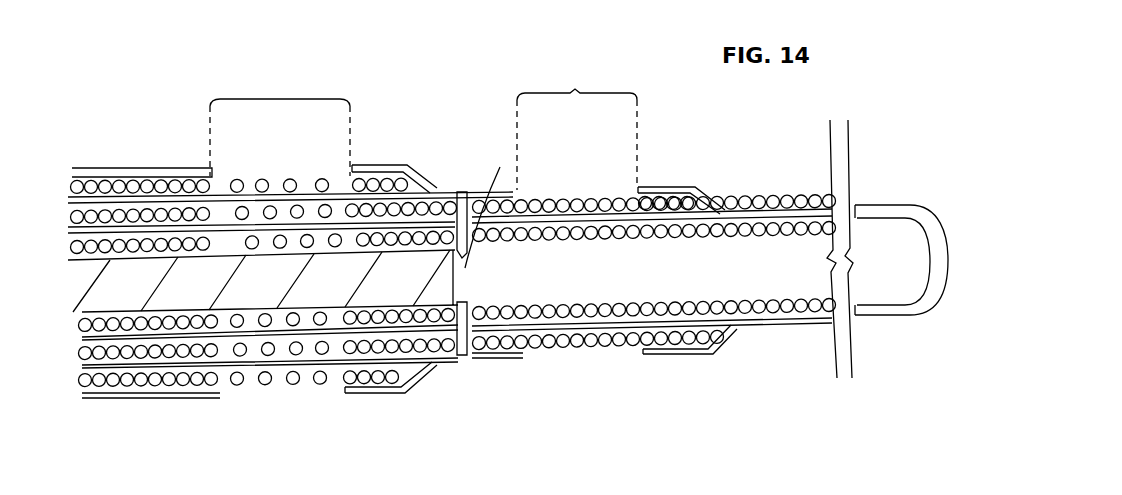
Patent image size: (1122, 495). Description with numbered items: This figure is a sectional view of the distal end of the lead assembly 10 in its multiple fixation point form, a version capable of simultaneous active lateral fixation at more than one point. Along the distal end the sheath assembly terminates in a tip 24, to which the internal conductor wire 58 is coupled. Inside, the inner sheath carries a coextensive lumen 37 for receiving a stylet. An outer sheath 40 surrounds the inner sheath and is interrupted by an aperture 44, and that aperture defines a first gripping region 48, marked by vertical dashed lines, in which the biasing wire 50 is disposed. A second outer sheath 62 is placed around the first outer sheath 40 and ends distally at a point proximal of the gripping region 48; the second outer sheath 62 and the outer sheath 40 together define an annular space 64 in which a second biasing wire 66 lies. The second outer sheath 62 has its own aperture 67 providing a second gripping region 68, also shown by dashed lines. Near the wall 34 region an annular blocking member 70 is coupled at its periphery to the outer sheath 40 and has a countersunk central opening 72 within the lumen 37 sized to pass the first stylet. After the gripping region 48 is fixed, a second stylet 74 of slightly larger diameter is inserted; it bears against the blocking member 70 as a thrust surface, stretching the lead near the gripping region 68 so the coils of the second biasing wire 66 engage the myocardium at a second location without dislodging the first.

The lead assembly 10 is at (364, 158).
The tip 24 is at (910, 203).
The outer tubular wall 34 is at (800, 207).
The lumen 37 is at (717, 257).
The outer sheath 40 is at (686, 187).
The aperture 44 is at (633, 188).
The gripping region 48 is at (577, 128).
The biasing wire 50 is at (457, 192).
The internal conductor wire 58 is at (760, 216).
The second outer sheath 62 is at (123, 175).
The annular space 64 is at (183, 178).
The second biasing wire 66 is at (236, 182).
The aperture 67 is at (343, 178).
The second gripping region 68 is at (280, 128).
The annular blocking member 70 is at (459, 190).
The central opening 72 is at (490, 185).
The second stylet 74 is at (342, 378).